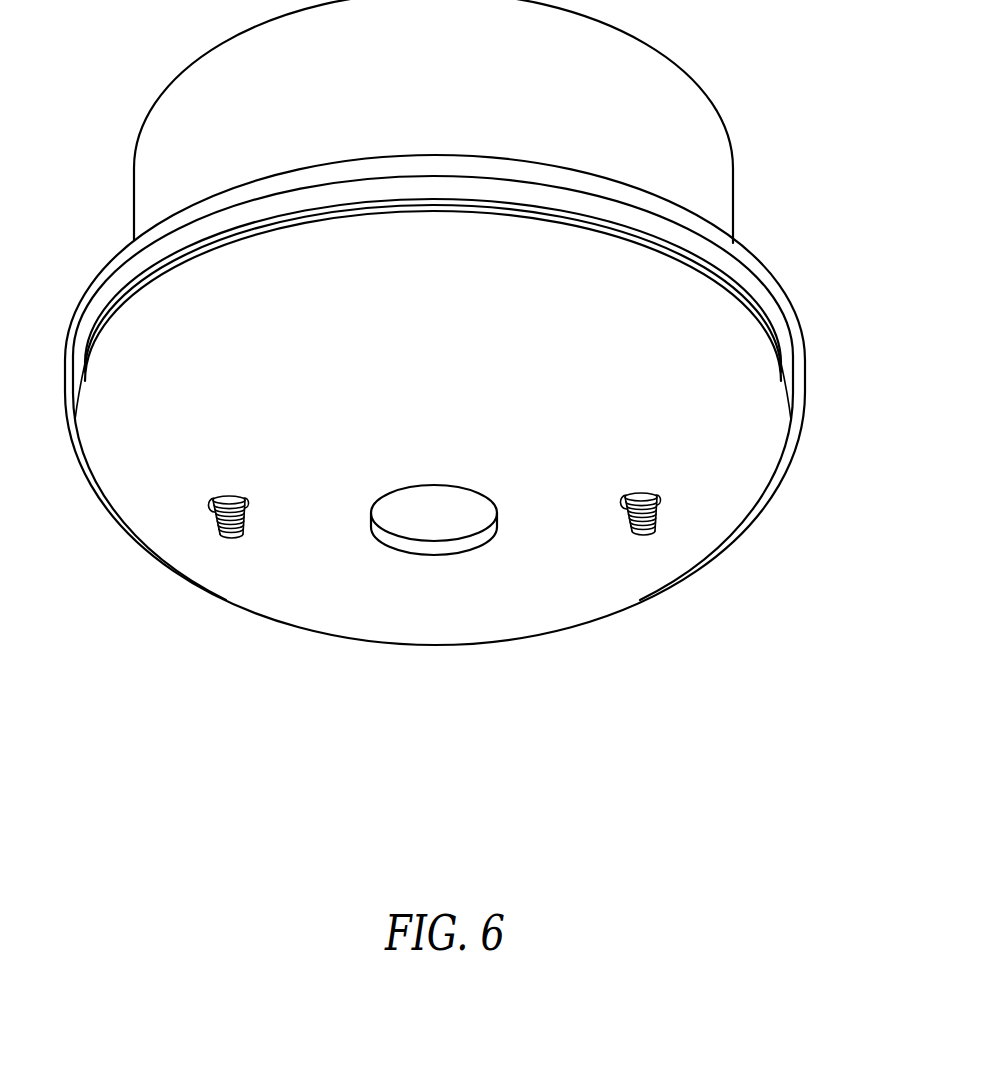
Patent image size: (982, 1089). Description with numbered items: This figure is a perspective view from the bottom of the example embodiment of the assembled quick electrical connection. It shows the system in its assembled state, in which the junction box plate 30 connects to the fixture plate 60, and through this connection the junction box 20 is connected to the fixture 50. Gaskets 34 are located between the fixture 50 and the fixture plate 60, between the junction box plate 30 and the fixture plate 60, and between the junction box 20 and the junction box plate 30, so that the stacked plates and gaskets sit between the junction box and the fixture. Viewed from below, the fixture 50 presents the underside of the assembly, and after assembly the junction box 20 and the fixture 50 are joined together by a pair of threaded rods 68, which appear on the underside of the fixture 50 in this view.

The junction box 20 is at (710, 155).
The junction box plate 30 is at (762, 275).
The gaskets 34 is at (130, 300).
The fixture 50 is at (460, 322).
The fixture plate 60 is at (777, 308).
The threaded rods 68 is at (222, 538).